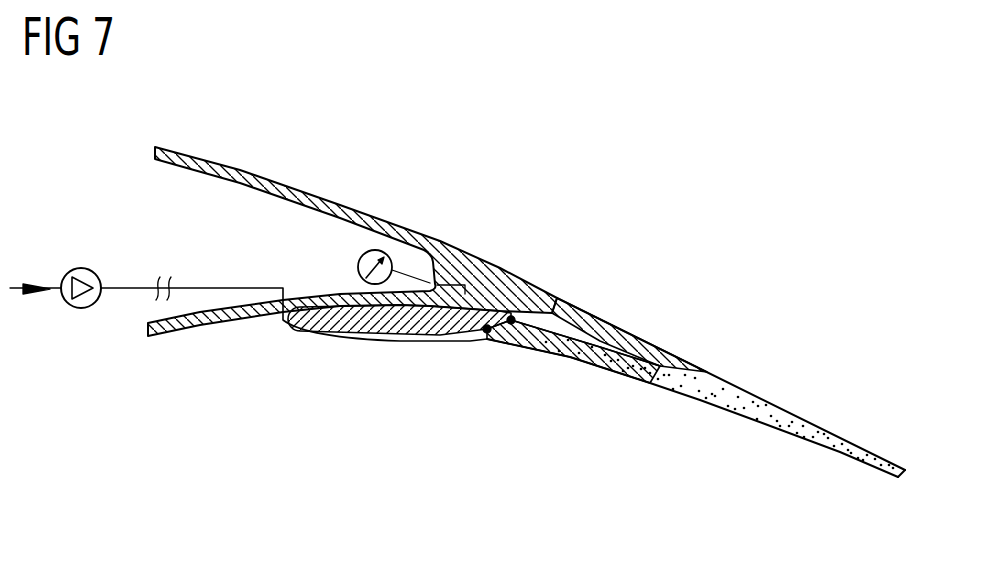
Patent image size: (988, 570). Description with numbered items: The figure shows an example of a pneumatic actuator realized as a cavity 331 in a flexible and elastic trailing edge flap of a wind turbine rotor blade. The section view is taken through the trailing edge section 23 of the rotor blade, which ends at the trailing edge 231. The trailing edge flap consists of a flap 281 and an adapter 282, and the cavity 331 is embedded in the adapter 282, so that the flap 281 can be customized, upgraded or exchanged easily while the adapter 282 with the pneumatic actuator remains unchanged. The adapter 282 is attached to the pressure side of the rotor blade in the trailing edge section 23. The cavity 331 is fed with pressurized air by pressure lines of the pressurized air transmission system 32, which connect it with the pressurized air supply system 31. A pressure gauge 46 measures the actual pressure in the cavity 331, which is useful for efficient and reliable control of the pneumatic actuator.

The trailing edge section 23 is at (490, 187).
The pressurized air supply system 31 is at (78, 264).
The pressurized air transmission system 32 is at (225, 287).
The pressure gauge 46 is at (358, 262).
The adapter 282 is at (658, 343).
The flap 281 is at (777, 408).
The cavity 331 is at (536, 333).
The trailing edge 231 is at (903, 482).